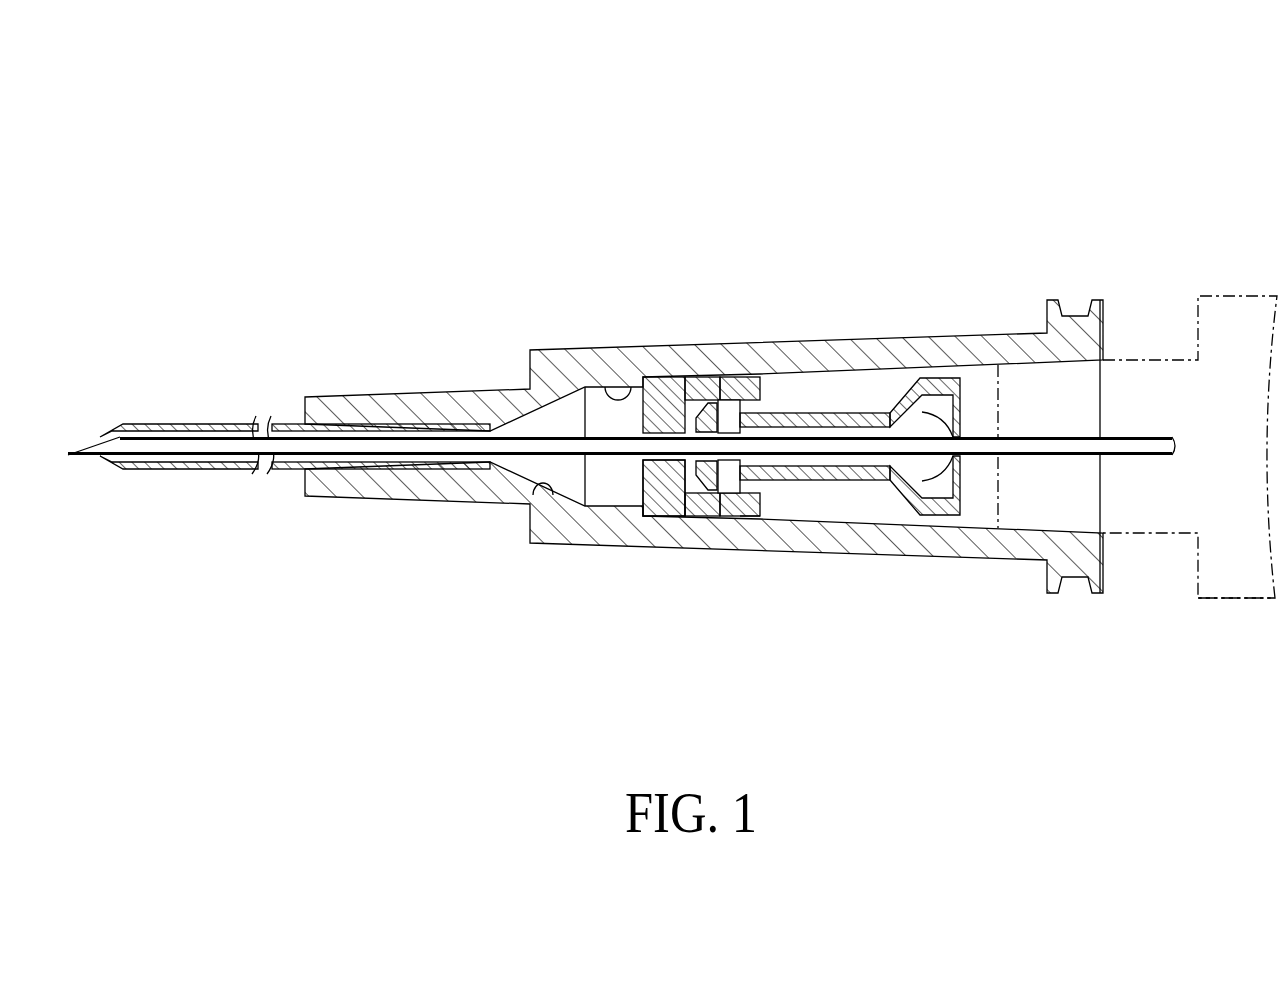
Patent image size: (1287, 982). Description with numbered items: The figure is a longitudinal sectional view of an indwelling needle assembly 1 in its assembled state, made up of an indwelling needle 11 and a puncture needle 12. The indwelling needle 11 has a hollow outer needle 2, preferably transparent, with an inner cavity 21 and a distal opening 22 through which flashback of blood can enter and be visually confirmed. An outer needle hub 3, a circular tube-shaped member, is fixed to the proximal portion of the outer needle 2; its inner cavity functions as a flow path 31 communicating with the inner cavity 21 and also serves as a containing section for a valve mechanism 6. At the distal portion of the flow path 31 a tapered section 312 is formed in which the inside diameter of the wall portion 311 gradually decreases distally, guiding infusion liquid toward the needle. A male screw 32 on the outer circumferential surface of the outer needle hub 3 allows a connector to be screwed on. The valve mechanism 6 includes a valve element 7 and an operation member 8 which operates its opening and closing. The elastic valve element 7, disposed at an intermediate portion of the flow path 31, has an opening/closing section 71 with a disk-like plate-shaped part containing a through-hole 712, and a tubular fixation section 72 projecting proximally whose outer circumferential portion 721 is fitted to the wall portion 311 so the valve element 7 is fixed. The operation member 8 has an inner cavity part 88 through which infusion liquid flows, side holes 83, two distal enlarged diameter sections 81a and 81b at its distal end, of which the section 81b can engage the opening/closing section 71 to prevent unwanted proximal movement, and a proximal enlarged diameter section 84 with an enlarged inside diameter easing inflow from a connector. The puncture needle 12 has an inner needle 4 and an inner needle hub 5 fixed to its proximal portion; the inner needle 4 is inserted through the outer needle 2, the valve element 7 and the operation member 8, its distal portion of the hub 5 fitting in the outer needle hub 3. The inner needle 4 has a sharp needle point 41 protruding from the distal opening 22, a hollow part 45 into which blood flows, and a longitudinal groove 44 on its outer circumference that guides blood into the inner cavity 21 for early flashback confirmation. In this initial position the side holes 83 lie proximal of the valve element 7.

The indwelling needle assembly 1 is at (918, 170).
The outer needle 2 is at (276, 455).
The inner cavity 21 is at (222, 424).
The distal opening 22 is at (112, 428).
The outer needle hub 3 is at (911, 566).
The flow path 31 is at (610, 487).
The wall portion 311 is at (600, 386).
The tapered section 312 is at (532, 535).
The male screw 32 is at (1050, 298).
The inner needle 4 is at (610, 453).
The needle point 41 is at (66, 453).
The groove 44 is at (125, 422).
The hollow part 45 is at (174, 421).
The inner needle hub 5 is at (1239, 608).
The valve mechanism 6 is at (860, 692).
The valve element 7 is at (681, 524).
The opening/closing section 71 is at (657, 500).
The through-hole 712 is at (648, 492).
The operation member 8 is at (834, 498).
The distal enlarged diameter section 81a is at (688, 392).
The distal enlarged diameter section 81b is at (745, 388).
The side holes 83 is at (716, 400).
The fixation section 72 is at (735, 480).
The outer circumferential portion 721 is at (762, 512).
The inner cavity part 88 is at (855, 465).
The proximal enlarged diameter section 84 is at (948, 514).
The indwelling needle 11 is at (706, 258).
The puncture needle 12 is at (1228, 276).